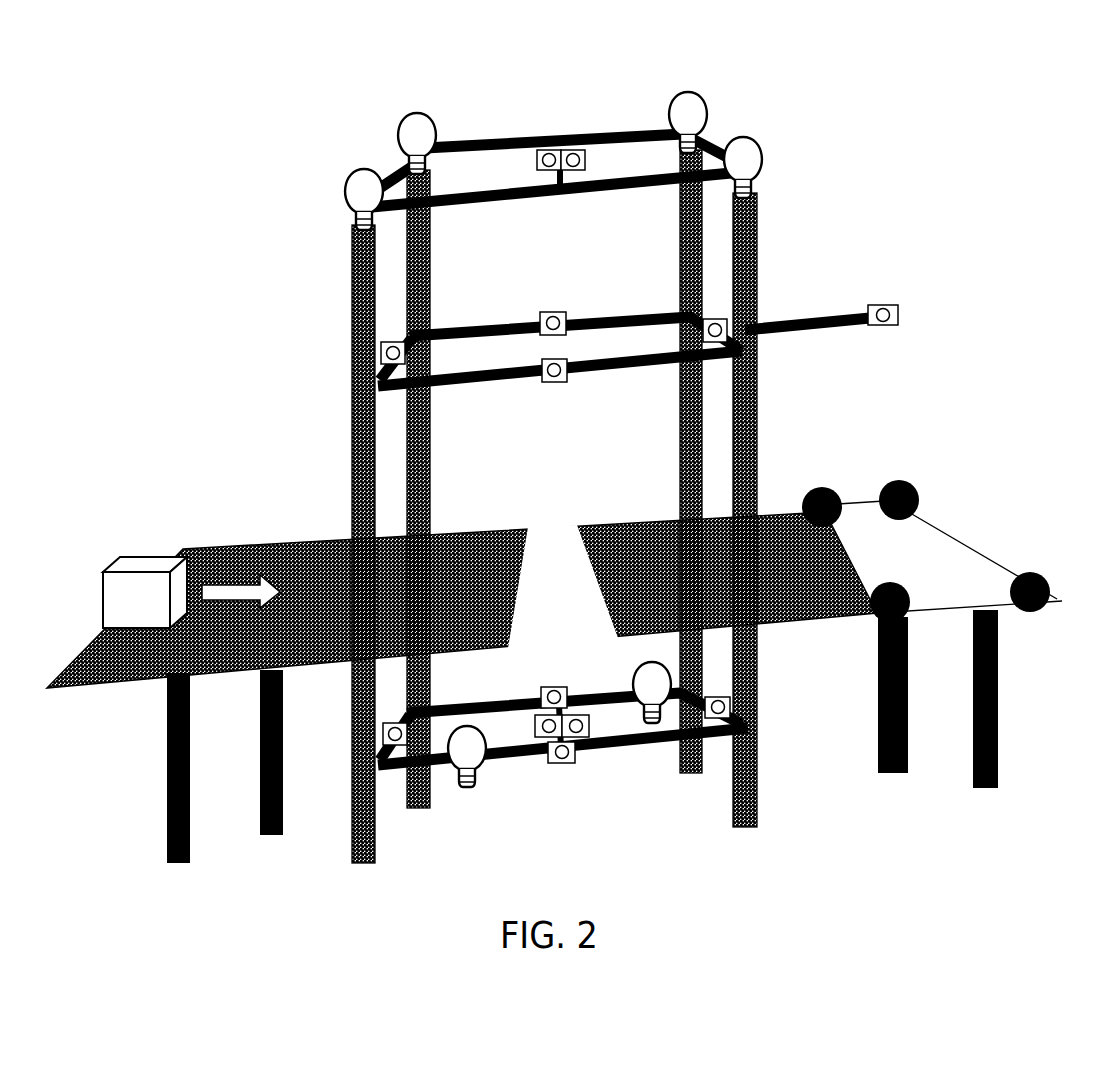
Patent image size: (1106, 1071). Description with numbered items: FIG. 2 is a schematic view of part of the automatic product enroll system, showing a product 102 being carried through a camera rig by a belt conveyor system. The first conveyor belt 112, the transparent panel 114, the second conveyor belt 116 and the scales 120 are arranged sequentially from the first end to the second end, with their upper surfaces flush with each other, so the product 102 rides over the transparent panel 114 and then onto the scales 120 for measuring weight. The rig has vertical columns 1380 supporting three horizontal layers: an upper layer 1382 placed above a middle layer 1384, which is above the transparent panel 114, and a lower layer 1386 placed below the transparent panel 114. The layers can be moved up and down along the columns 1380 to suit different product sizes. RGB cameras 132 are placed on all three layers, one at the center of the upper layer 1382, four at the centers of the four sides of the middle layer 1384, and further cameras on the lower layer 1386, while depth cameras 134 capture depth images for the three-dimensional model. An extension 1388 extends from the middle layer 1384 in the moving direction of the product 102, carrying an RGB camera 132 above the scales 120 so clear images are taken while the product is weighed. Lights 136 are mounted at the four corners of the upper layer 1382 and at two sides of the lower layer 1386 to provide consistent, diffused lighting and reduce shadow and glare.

The product 102 is at (133, 563).
The first conveyor belt 112 is at (248, 563).
The transparent panel 114 is at (548, 552).
The second conveyor belt 116 is at (778, 518).
The scales 120 is at (898, 492).
The RGB cameras 132 is at (536, 150).
The depth cameras 134 is at (565, 152).
The lights 136 is at (685, 121).
The vertical columns 1380 is at (750, 255).
The upper layer 1382 is at (612, 135).
The middle layer 1384 is at (597, 313).
The lower layer 1386 is at (750, 727).
The extension 1388 is at (837, 315).